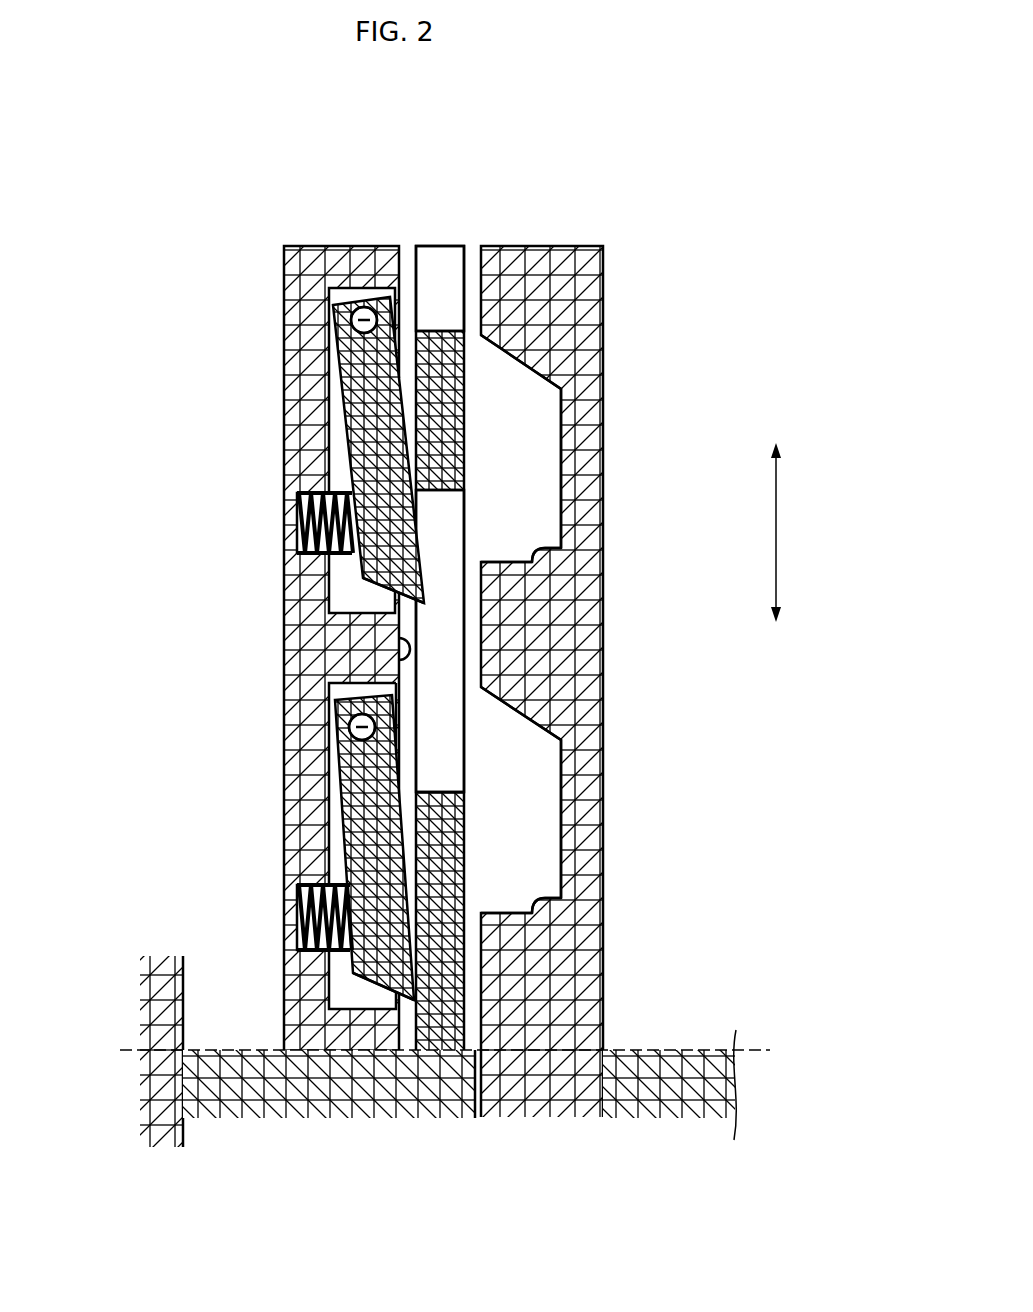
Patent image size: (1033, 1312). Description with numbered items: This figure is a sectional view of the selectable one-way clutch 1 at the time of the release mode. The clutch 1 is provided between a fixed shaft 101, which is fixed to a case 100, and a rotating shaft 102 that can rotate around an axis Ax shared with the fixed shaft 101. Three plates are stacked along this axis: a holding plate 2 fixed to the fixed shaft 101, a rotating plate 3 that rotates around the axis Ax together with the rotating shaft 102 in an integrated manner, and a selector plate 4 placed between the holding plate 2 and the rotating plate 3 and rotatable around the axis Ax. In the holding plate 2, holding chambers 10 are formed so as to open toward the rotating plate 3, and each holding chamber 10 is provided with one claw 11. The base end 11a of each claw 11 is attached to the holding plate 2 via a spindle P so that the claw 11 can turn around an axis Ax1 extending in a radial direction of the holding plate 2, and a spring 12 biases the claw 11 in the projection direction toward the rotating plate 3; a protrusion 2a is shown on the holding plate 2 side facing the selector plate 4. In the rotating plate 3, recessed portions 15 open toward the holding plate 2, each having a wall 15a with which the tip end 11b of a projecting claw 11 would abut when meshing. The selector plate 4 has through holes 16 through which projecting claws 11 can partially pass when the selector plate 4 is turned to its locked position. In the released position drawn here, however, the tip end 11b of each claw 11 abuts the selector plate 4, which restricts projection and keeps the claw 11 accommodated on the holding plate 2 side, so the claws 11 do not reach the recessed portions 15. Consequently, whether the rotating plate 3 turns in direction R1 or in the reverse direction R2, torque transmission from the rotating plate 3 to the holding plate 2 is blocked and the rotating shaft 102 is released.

The selectable one-way clutch 1 is at (614, 172).
The holding plate 2 is at (292, 398).
The protrusion 2a is at (399, 663).
The rotating plate 3 is at (581, 312).
The selector plate 4 is at (442, 258).
The holding chamber 10 is at (340, 457).
The claw 11 is at (373, 395).
The base end 11a is at (385, 298).
The tip end 11b is at (407, 597).
The spring 12 is at (307, 555).
The recessed portion 15 is at (533, 432).
The wall 15a is at (563, 551).
The through hole 16 is at (443, 297).
The case 100 is at (185, 982).
The fixed shaft 101 is at (347, 1100).
The rotating shaft 102 is at (663, 1100).
The spindle P is at (363, 300).
The axis Ax1 is at (358, 322).
The axis Ax is at (137, 1050).
The rotation direction R1 is at (776, 467).
The rotation direction R2 is at (776, 596).